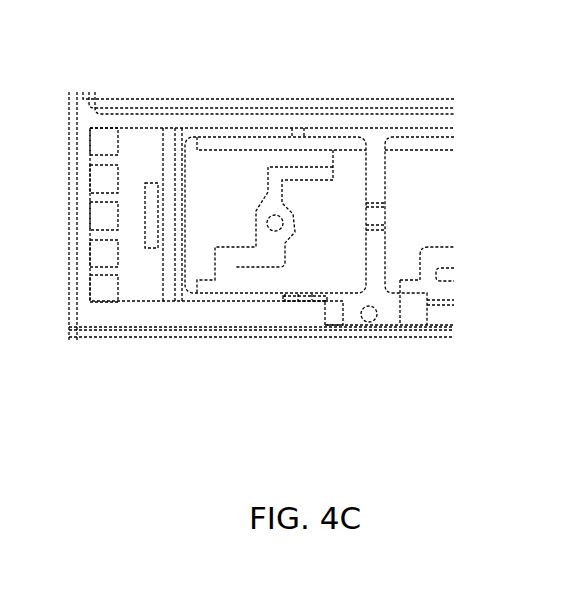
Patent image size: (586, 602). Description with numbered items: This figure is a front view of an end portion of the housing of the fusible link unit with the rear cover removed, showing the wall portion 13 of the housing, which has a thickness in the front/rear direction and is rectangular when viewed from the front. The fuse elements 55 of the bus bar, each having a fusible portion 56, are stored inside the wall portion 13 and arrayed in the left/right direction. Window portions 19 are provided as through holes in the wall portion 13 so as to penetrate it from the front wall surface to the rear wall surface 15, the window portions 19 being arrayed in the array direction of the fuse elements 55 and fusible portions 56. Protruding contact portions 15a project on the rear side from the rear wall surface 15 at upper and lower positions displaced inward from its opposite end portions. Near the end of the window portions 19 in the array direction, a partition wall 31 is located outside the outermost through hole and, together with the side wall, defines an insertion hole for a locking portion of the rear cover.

The wall portion 13 is at (68, 207).
The rear wall surface 15 is at (220, 136).
The protruding contact portion 15a is at (298, 133).
The window portion 19 is at (238, 190).
The partition wall 31 is at (163, 273).
The fuse element 55 is at (247, 257).
The fusible portion 56 is at (275, 190).